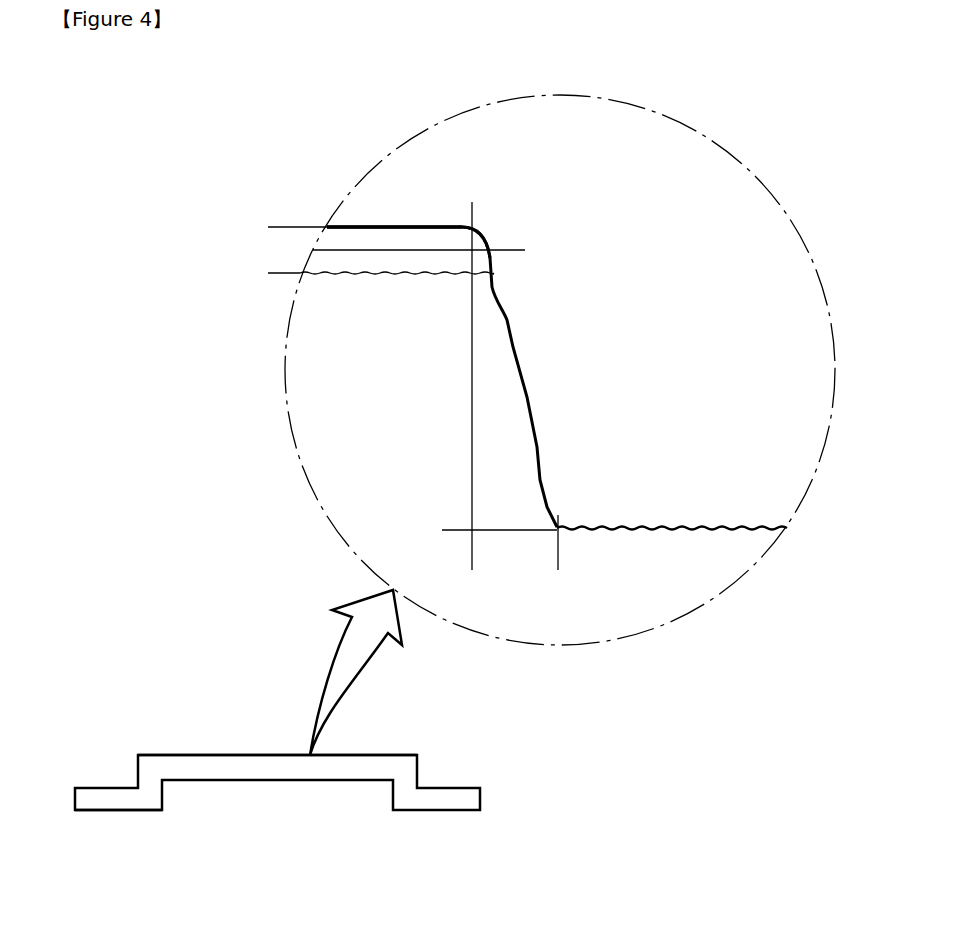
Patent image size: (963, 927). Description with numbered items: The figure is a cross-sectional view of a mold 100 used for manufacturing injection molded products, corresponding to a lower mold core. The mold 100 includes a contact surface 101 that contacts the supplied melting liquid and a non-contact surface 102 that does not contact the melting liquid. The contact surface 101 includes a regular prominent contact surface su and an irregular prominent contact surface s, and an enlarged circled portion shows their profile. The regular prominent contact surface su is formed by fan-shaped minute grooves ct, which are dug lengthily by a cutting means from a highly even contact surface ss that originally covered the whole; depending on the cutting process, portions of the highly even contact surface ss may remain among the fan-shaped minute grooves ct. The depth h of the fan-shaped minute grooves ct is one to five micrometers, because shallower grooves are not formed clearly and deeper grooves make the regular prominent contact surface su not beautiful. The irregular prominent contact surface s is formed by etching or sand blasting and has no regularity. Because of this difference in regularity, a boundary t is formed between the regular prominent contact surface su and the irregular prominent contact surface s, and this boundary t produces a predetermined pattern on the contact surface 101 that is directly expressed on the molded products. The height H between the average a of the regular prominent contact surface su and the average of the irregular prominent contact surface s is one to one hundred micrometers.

The average of the regular prominent contact surface a is at (502, 250).
The irregular prominent contact surface s is at (730, 523).
The regular prominent contact surface su is at (332, 117).
The highly even contact surface ss is at (358, 227).
The fan-shaped minute grooves ct is at (417, 237).
The depth of the fan-shaped minute grooves h is at (278, 227).
The height H is at (448, 250).
The boundary t is at (472, 560).
The mold 100 is at (517, 799).
The contact surface 101 is at (200, 755).
The non-contact surface 102 is at (120, 812).